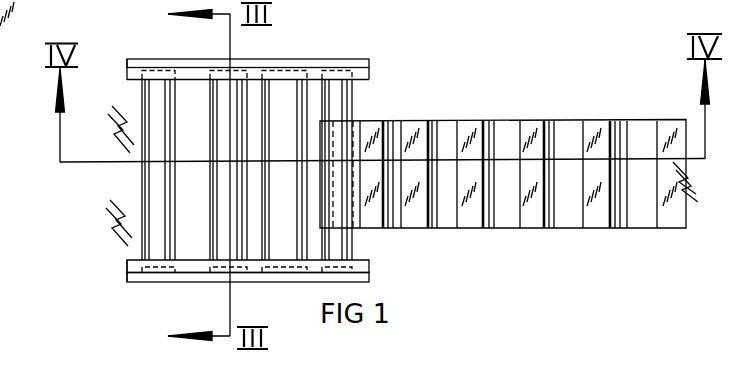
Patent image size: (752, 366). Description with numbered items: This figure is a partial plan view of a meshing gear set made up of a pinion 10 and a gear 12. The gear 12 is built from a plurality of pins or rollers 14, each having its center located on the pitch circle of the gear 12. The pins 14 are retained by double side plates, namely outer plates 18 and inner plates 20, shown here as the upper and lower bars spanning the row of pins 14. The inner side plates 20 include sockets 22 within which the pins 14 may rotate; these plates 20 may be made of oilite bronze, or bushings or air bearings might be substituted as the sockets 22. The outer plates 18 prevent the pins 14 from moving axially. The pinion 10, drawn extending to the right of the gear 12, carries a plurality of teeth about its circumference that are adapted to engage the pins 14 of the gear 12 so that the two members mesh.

The pinion 10 is at (557, 119).
The gear 12 is at (327, 59).
The pins 14 is at (278, 98).
The outer side plates 18 is at (127, 59).
The inner side plates 20 is at (125, 78).
The sockets 22 is at (270, 265).